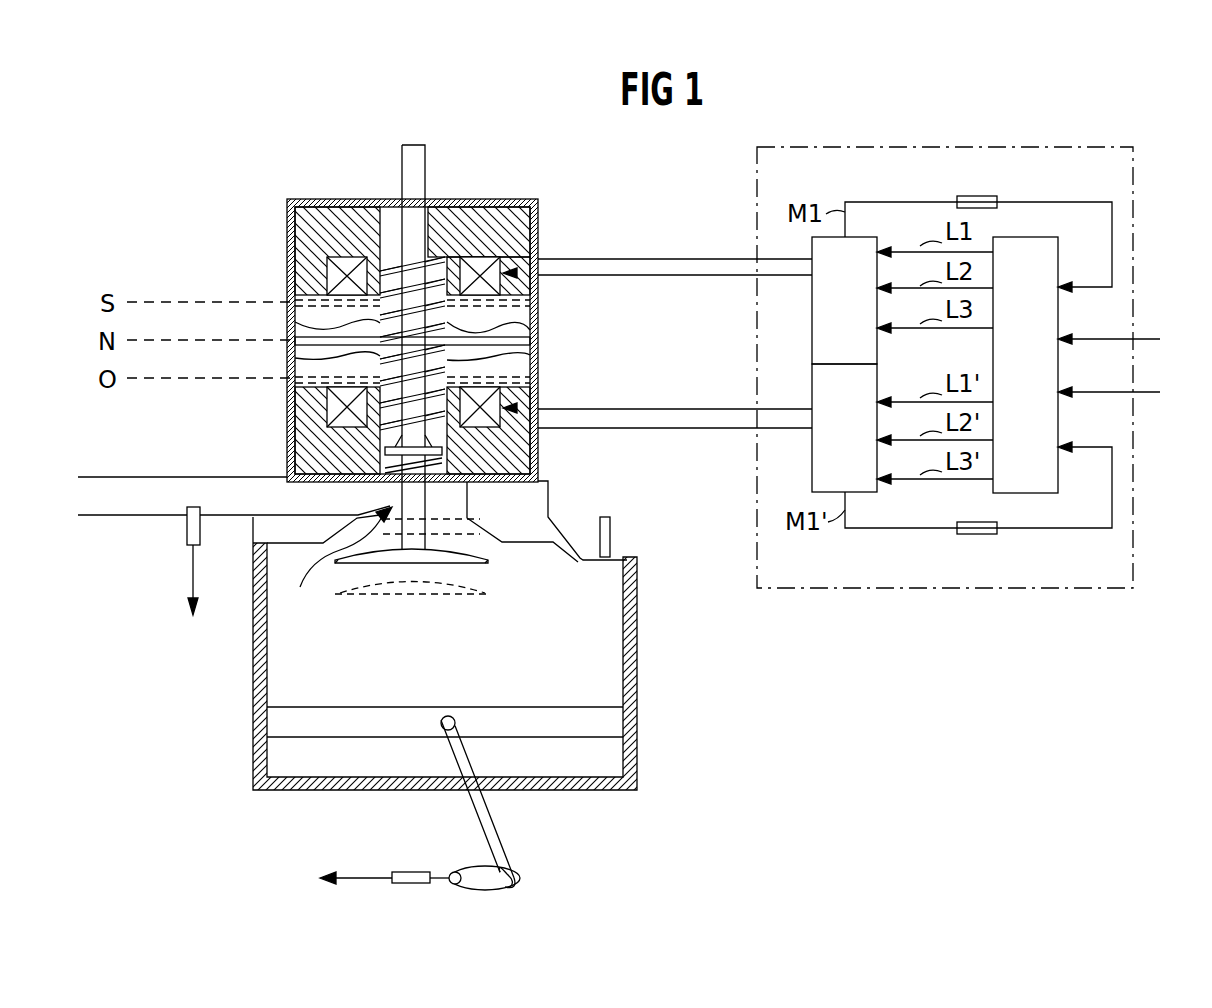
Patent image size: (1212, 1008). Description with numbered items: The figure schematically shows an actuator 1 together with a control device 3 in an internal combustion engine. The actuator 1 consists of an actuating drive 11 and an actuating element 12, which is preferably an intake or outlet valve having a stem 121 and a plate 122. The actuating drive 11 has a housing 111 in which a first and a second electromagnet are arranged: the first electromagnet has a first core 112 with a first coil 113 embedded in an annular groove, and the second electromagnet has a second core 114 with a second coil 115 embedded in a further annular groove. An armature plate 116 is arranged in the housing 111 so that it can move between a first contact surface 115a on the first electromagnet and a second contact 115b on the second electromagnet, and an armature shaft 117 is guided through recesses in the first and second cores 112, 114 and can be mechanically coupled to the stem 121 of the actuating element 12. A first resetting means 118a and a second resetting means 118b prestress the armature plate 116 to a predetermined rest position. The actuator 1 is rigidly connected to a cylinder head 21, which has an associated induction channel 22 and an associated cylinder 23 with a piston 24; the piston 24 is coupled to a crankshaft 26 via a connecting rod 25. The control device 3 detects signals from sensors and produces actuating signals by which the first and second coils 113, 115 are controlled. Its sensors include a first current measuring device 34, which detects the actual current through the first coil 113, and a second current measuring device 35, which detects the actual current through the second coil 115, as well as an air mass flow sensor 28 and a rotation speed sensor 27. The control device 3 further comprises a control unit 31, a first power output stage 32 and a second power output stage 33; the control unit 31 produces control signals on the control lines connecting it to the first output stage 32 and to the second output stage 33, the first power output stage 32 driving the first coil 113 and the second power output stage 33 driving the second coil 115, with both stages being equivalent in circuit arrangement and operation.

The actuator 1 is at (262, 230).
The actuating drive 11 is at (355, 160).
The actuating element 12 is at (339, 563).
The cylinder head 21 is at (540, 514).
The induction channel 22 is at (97, 507).
The cylinder 23 is at (640, 745).
The piston 24 is at (558, 718).
The connecting rod 25 is at (495, 830).
The crankshaft 26 is at (456, 872).
The rotation speed sensor 27 is at (405, 871).
The air mass flow sensor 28 is at (187, 528).
The control device 3 is at (1065, 145).
The control unit 31 is at (1062, 360).
The first power output stage 32 is at (812, 297).
The second power output stage 33 is at (812, 390).
The first current measuring device 34 is at (975, 196).
The second current measuring device 35 is at (975, 537).
The housing 111 is at (497, 198).
The first core 112 is at (318, 200).
The first coil 113 is at (300, 267).
The second core 114 is at (312, 456).
The second coil 115 is at (323, 408).
The first contact surface 115a is at (540, 302).
The second contact 115b is at (540, 380).
The armature plate 116 is at (325, 341).
The armature shaft 117 is at (413, 157).
The first resetting means 118a is at (538, 337).
The second resetting means 118b is at (290, 360).
The stem 121 is at (420, 500).
The plate 122 is at (470, 561).